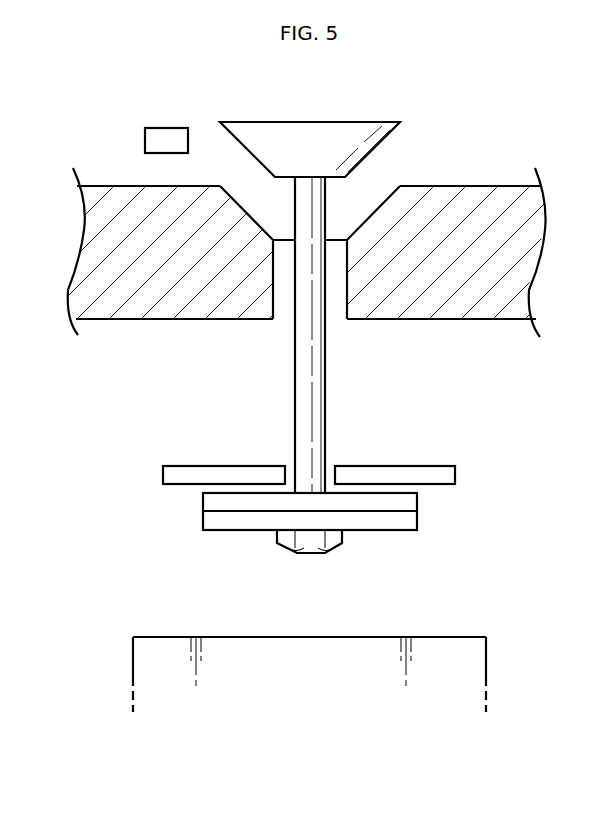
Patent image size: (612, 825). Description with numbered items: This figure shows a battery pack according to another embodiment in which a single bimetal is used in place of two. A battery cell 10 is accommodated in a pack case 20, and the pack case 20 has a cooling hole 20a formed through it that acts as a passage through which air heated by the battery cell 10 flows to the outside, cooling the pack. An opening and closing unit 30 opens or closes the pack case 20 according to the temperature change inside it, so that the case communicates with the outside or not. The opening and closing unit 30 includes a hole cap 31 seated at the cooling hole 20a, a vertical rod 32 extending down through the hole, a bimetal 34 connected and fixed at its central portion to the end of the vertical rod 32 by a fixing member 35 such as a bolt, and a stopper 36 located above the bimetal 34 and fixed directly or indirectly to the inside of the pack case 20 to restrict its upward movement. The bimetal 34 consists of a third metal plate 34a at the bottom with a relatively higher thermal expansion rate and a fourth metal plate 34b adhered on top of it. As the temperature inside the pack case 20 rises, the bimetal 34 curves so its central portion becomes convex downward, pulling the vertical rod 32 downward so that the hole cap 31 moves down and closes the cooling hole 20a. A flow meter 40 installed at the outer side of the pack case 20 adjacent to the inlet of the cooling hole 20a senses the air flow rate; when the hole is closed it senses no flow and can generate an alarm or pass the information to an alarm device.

The battery cell 10 is at (237, 637).
The pack case 20 is at (480, 186).
The cooling hole 20a is at (328, 278).
The opening and closing unit 30 is at (178, 505).
The hole cap 31 is at (342, 122).
The vertical rod 32 is at (294, 368).
The bimetal 34 is at (477, 490).
The third metal plate 34a is at (417, 520).
The fourth metal plate 34b is at (417, 497).
The fixing member 35 is at (342, 538).
The stopper 36 is at (222, 466).
The flow meter 40 is at (165, 128).